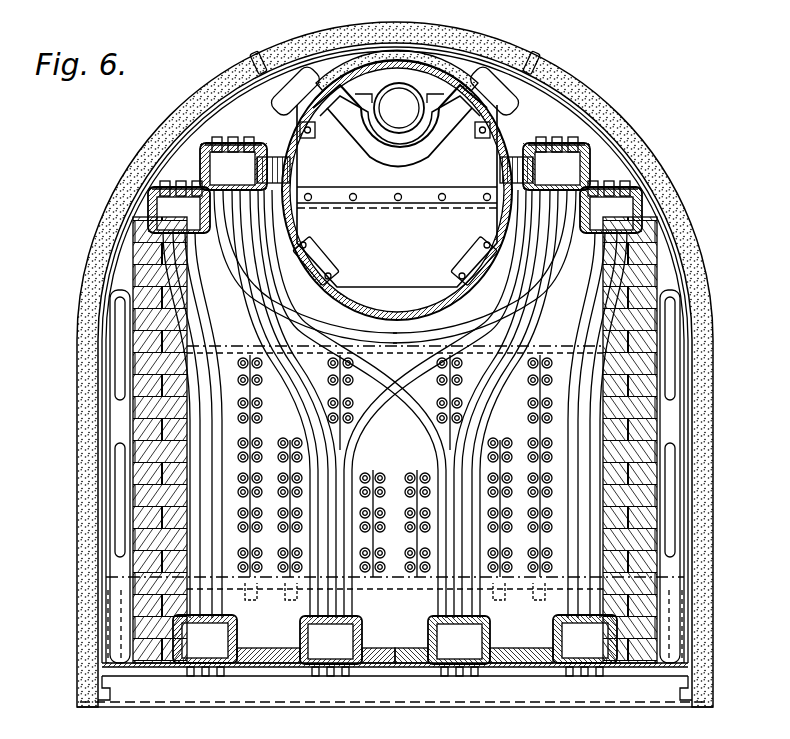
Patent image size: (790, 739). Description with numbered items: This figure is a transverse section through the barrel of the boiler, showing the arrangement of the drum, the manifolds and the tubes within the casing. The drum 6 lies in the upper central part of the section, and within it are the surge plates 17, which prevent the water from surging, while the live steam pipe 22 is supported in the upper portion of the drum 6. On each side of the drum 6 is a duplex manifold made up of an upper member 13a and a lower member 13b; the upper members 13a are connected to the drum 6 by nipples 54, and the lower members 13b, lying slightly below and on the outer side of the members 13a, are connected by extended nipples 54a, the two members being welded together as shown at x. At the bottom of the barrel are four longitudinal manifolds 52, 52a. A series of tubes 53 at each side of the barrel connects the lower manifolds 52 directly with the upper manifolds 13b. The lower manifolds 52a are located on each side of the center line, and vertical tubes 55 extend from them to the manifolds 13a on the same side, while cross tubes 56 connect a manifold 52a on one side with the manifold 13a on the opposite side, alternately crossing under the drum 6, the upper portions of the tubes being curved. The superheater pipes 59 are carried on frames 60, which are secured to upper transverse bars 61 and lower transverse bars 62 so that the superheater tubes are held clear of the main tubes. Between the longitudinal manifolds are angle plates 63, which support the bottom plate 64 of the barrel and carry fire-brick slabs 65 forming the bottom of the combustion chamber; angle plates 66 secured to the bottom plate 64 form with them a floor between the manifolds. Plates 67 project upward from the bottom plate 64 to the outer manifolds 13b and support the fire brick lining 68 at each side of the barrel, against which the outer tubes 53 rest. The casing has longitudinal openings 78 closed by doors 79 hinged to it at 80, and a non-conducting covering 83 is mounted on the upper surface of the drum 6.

The drum 6 is at (404, 280).
The upper manifold member 13a is at (395, 163).
The lower manifold member 13b is at (395, 399).
The surge plate 17 is at (386, 270).
The live steam pipe 22 is at (420, 128).
The longitudinal manifold 52 is at (395, 645).
The longitudinal manifold 52a is at (362, 631).
The tubes 53 is at (272, 292).
The nipples 54 is at (291, 168).
The extended nipples 54a is at (299, 216).
The vertical tubes 55 is at (306, 600).
The cross tubes 56 is at (388, 400).
The superheater pipes 59 is at (260, 378).
The frames 60 is at (262, 433).
The upper transverse bars 61 is at (263, 347).
The lower transverse bars 62 is at (258, 576).
The angle plates 63 is at (372, 677).
The bottom plate 64 is at (150, 680).
The fire-brick slabs 65 is at (272, 658).
The angle plates 66 is at (193, 684).
The plates 67 is at (121, 446).
The fire brick lining 68 is at (135, 236).
The longitudinal openings 78 is at (168, 126).
The doors 79 is at (210, 92).
The hinge 80 is at (254, 56).
The non-conducting covering 83 is at (497, 50).
The weld x is at (203, 172).